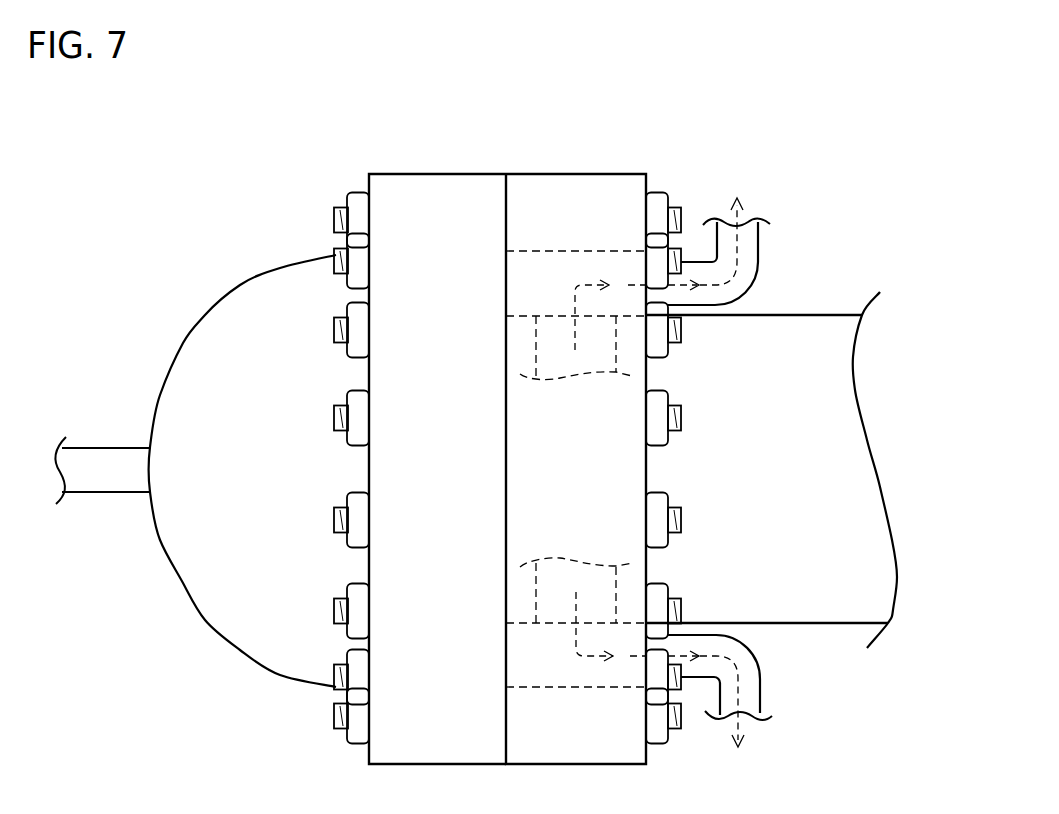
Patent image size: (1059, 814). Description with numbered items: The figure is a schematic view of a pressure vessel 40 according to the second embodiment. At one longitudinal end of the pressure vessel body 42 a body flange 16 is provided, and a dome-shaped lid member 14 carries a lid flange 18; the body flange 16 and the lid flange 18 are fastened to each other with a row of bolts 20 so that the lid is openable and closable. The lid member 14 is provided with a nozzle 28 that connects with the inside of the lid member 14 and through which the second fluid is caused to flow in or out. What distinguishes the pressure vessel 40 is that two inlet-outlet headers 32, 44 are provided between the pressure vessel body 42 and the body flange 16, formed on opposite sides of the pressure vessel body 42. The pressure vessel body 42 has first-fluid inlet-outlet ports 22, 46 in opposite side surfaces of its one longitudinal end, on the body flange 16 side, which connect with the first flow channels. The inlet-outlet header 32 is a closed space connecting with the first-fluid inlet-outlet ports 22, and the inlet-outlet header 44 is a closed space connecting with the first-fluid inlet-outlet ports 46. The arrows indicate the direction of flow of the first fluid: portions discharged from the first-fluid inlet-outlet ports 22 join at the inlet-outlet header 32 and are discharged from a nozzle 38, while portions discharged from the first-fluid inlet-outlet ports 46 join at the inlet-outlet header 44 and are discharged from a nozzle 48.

The lid member 14 is at (230, 608).
The body flange 16 is at (605, 174).
The lid flange 18 is at (463, 174).
The bolts 20 is at (336, 217).
The first-fluid inlet-outlet ports 22 is at (562, 622).
The nozzle 28 is at (108, 493).
The inlet-outlet header 32 is at (570, 675).
The nozzle 38 is at (762, 678).
The pressure vessel 40 is at (202, 256).
The pressure vessel body 42 is at (788, 327).
The inlet-outlet header 44 is at (552, 262).
The first-fluid inlet-outlet ports 46 is at (551, 320).
The nozzle 48 is at (770, 247).